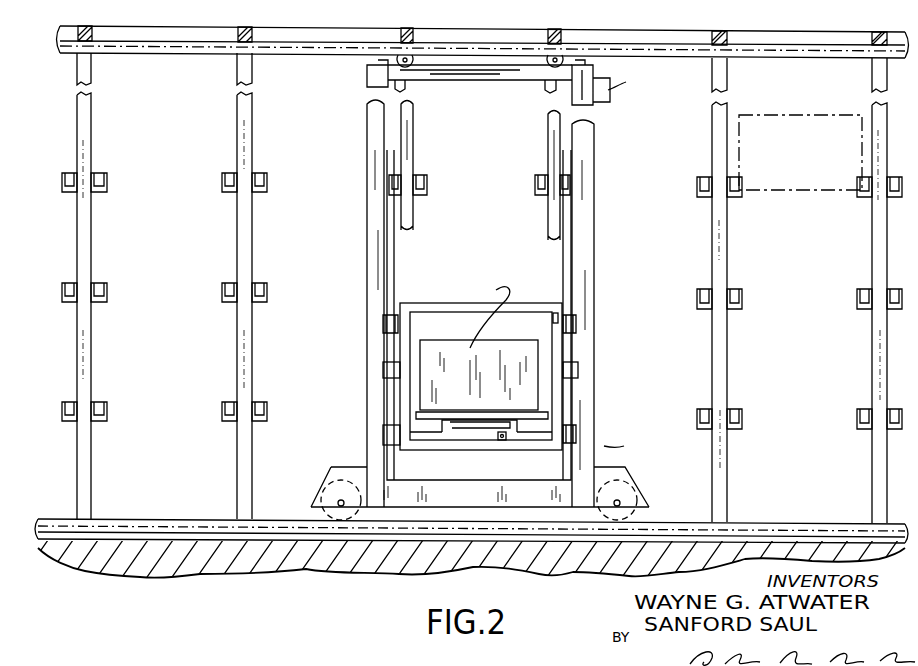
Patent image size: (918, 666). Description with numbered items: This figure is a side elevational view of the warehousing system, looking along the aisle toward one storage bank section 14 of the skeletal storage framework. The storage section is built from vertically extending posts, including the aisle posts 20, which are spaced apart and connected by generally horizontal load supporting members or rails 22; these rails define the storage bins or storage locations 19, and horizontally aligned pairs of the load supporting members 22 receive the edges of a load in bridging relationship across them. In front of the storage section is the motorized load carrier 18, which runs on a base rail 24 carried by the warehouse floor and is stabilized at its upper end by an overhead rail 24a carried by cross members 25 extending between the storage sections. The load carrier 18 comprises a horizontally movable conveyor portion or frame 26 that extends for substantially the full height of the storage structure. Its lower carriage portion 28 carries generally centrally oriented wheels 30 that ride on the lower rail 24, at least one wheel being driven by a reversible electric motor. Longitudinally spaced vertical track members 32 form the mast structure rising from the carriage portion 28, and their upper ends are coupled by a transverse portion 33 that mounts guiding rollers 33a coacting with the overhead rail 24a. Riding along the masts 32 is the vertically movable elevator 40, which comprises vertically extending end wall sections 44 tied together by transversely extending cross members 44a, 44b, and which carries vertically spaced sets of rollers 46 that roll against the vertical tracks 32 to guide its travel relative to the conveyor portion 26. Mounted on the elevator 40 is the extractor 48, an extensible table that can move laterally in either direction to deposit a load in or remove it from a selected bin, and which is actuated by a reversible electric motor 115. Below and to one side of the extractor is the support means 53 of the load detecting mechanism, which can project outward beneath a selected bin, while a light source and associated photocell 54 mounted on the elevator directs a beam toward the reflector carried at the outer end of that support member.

The storage bank section 14 is at (75, 235).
The motorized load carrier 18 is at (594, 238).
The storage bin 19 is at (287, 123).
The aisle post 20 is at (250, 254).
The load supporting member 22 is at (62, 189).
The base rail 24 is at (792, 524).
The overhead rail 24a is at (654, 46).
The cross member 25 is at (92, 32).
The conveyor portion 26 is at (596, 147).
The lower carriage portion 28 is at (400, 497).
The wheel 30 is at (326, 506).
The vertical track member 32 is at (368, 270).
The transverse portion 33 is at (487, 80).
The guiding roller 33a is at (408, 55).
The elevator 40 is at (563, 354).
The end wall section 44 is at (410, 340).
The cross member 44a is at (462, 303).
The cross member 44b is at (414, 452).
The roller 46 is at (380, 326).
The extractor 48 is at (534, 432).
The support means 53 is at (504, 437).
The light source and associated photocell 54 is at (559, 311).
The reversible electric motor 115 is at (384, 436).